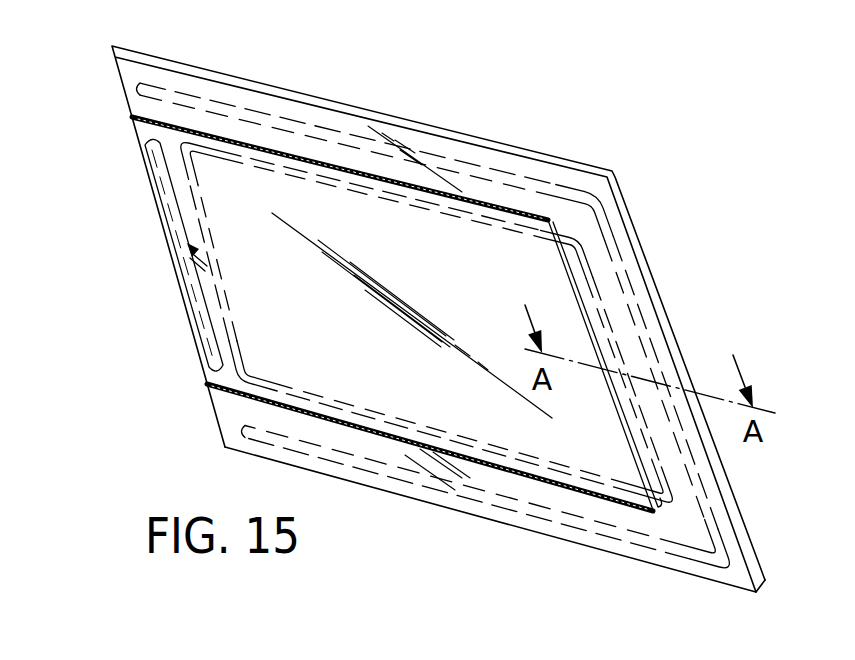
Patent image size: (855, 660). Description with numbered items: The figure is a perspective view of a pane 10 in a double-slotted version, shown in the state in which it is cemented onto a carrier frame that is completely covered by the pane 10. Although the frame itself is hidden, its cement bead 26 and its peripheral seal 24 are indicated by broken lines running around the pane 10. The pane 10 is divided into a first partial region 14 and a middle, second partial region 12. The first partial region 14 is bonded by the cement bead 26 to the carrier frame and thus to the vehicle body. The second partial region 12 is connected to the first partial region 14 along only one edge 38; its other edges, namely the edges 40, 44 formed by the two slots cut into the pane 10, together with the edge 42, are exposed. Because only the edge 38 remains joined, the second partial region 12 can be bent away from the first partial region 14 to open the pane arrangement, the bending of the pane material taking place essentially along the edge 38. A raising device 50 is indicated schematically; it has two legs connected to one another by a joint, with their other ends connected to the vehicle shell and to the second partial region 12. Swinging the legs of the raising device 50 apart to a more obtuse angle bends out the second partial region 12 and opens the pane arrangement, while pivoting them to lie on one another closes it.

The pane 10 is at (620, 150).
The second partial region 12 is at (467, 257).
The first partial region 14 is at (506, 487).
The peripheral seal 24 is at (518, 225).
The cement bead 26 is at (606, 231).
The edge 38 is at (573, 292).
The edge 40 is at (375, 178).
The edge 42 is at (152, 212).
The edge 44 is at (385, 438).
The raising device 50 is at (186, 262).